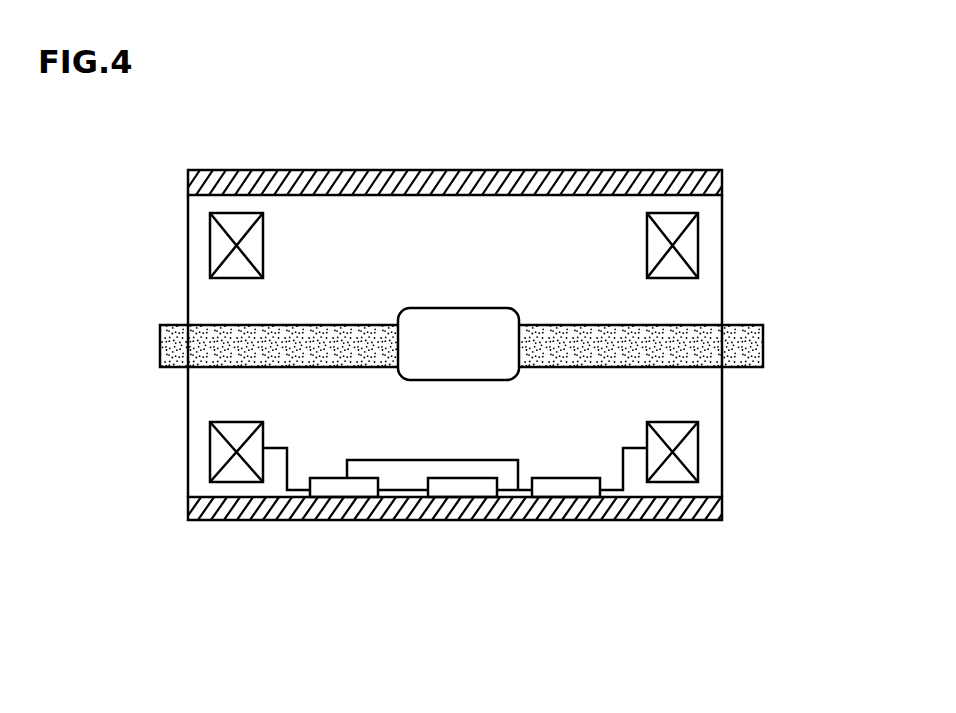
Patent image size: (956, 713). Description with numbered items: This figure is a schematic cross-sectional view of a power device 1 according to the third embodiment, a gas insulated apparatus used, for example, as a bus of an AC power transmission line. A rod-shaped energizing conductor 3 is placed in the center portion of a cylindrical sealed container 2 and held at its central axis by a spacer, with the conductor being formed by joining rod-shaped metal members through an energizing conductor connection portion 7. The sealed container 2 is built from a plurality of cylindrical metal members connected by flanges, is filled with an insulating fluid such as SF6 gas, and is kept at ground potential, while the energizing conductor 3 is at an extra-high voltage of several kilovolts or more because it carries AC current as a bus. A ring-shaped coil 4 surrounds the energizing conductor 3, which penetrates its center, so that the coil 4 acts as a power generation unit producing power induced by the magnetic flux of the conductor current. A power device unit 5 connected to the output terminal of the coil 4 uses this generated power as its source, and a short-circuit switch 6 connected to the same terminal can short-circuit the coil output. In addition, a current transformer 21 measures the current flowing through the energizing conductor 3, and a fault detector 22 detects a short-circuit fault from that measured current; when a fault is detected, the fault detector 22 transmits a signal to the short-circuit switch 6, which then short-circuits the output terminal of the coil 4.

The power device 1 is at (712, 137).
The sealed container 2 is at (395, 170).
The energizing conductor 3 is at (315, 332).
The ring-shaped coil 4 is at (237, 484).
The power device unit 5 is at (458, 490).
The short-circuit switch 6 is at (348, 490).
The energizing conductor connection portion 7 is at (455, 308).
The current transformer 21 is at (675, 486).
The fault detector 22 is at (565, 490).